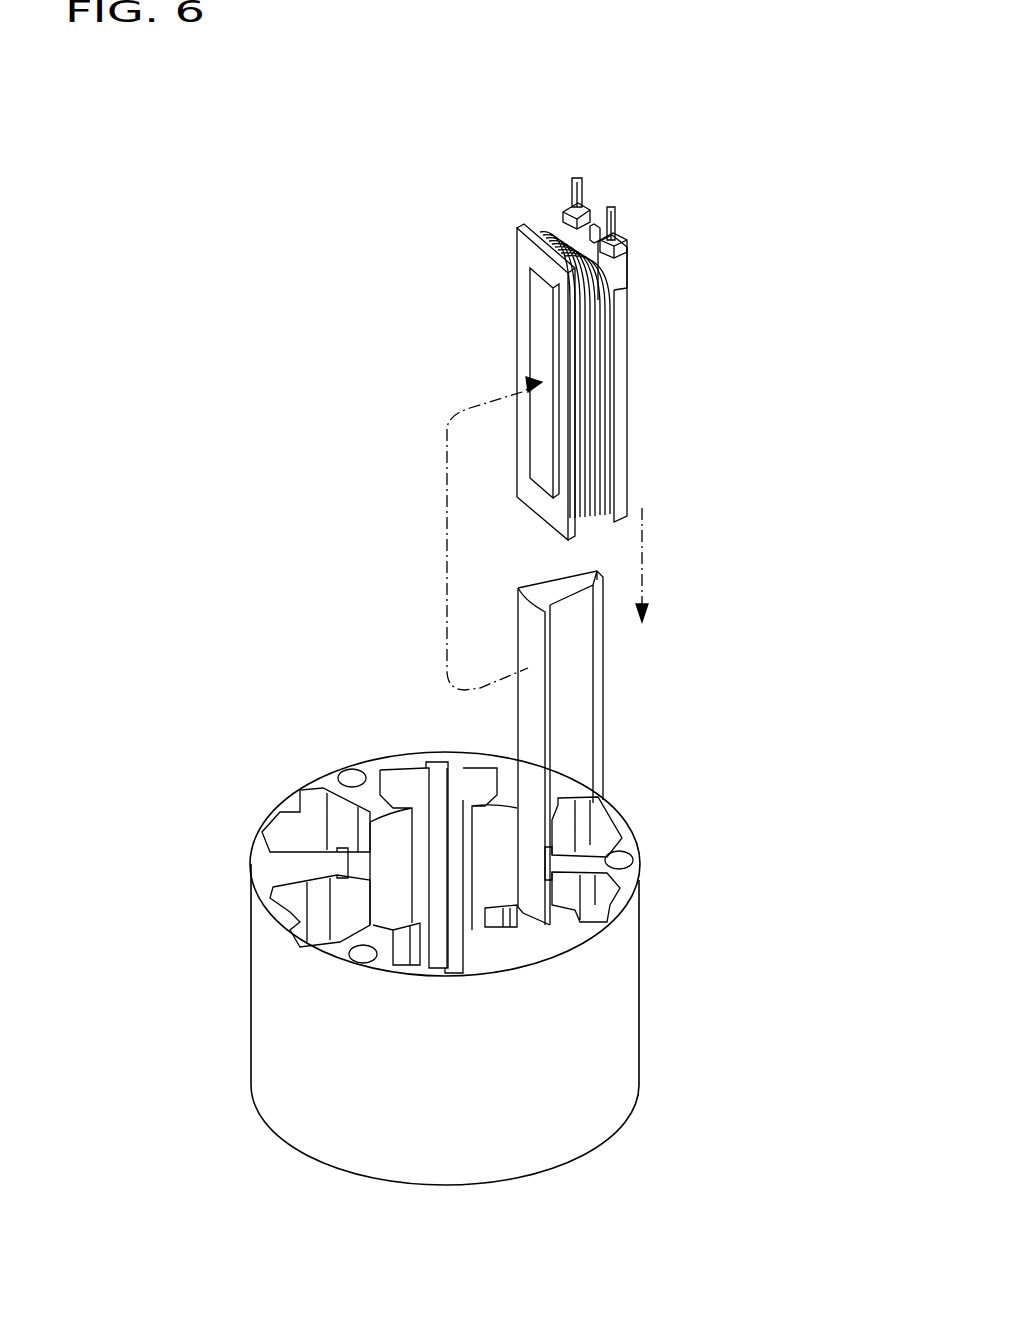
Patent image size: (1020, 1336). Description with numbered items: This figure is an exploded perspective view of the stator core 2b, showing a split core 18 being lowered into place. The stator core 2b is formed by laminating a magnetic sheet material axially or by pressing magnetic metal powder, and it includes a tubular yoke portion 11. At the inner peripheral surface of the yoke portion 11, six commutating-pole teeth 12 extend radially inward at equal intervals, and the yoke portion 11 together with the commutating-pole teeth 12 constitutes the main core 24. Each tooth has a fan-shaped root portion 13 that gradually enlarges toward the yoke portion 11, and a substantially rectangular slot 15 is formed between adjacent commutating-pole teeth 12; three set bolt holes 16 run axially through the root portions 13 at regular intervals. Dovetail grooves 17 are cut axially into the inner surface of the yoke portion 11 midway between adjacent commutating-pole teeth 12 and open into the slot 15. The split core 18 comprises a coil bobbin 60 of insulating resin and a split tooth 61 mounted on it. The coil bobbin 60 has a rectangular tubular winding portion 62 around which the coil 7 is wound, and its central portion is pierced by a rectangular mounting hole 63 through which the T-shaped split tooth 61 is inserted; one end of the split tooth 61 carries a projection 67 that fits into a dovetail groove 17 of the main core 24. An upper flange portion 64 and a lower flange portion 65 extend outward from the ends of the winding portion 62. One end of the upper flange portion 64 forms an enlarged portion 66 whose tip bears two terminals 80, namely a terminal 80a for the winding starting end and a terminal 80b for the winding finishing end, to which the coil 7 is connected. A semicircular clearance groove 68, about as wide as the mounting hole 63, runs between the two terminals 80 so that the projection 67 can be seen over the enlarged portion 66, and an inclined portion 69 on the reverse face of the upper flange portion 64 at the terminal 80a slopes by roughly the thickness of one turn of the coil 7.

The stator core 2b is at (546, 1022).
The main core 24 is at (546, 1022).
The yoke portion 11 is at (620, 885).
The commutating-pole teeth 12 is at (573, 856).
The root portion 13 is at (530, 943).
The slot 15 is at (458, 942).
The set bolt holes 16 is at (628, 850).
The dovetail grooves 17 is at (583, 930).
The split core 18 is at (630, 485).
The coil bobbin 60 is at (595, 302).
The split tooth 61 is at (617, 748).
The winding portion 62 is at (651, 375).
The coil 7 is at (607, 363).
The mounting hole 63 is at (535, 331).
The upper flange portion 64 is at (618, 442).
The lower flange portion 65 is at (528, 252).
The enlarged portion 66 is at (628, 251).
The projection 67 is at (598, 645).
The clearance groove 68 is at (597, 228).
The inclined portion 69 is at (565, 222).
The terminals 80 is at (653, 161).
The terminal of winding starting end 80a is at (578, 178).
The terminal of winding finishing end 80b is at (609, 207).